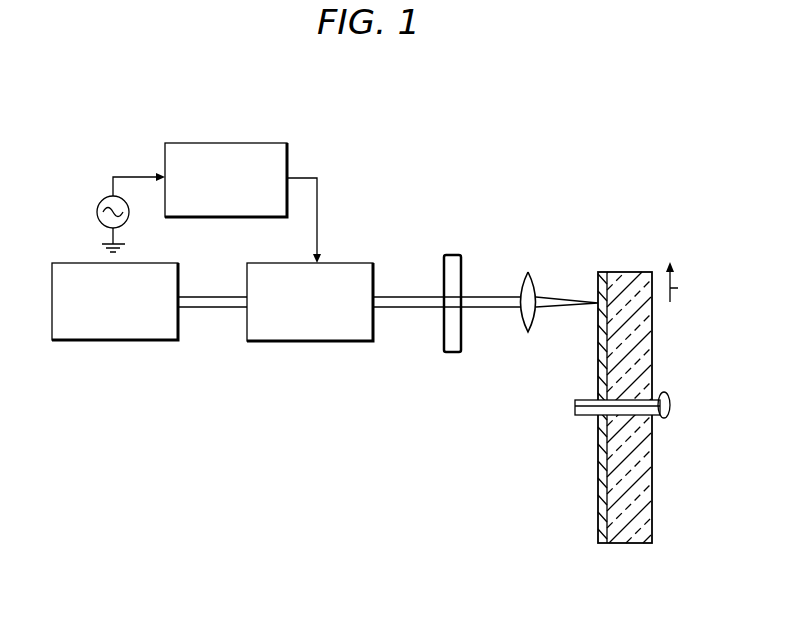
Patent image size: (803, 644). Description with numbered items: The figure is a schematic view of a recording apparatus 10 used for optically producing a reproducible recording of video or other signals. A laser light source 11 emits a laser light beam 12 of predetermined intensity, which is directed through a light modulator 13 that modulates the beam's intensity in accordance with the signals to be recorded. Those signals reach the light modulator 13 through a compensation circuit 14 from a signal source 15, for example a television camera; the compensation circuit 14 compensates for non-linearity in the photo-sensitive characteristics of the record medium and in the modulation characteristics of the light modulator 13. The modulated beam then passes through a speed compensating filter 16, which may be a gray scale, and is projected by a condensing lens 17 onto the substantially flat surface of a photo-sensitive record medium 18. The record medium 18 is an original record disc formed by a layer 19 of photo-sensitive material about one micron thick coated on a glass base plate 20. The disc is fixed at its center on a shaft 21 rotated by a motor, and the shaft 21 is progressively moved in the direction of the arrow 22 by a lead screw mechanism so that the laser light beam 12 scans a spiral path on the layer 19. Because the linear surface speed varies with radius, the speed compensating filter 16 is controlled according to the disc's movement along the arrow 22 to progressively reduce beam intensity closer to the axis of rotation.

The recording apparatus 10 is at (448, 212).
The laser light source 11 is at (60, 335).
The laser light beam 12 is at (222, 283).
The light modulator 13 is at (260, 337).
The compensation circuit 14 is at (308, 138).
The signal source 15 is at (98, 206).
The speed compensating filter 16 is at (444, 251).
The condensing lens 17 is at (533, 284).
The record medium 18 is at (621, 414).
The layer of photo-sensitive material 19 is at (600, 532).
The base plate 20 is at (640, 527).
The shaft 21 is at (578, 405).
The arrow 22 is at (688, 282).